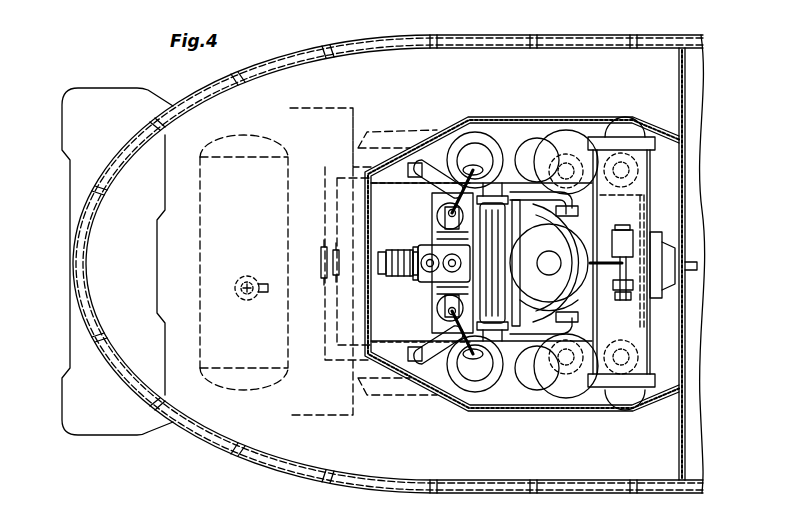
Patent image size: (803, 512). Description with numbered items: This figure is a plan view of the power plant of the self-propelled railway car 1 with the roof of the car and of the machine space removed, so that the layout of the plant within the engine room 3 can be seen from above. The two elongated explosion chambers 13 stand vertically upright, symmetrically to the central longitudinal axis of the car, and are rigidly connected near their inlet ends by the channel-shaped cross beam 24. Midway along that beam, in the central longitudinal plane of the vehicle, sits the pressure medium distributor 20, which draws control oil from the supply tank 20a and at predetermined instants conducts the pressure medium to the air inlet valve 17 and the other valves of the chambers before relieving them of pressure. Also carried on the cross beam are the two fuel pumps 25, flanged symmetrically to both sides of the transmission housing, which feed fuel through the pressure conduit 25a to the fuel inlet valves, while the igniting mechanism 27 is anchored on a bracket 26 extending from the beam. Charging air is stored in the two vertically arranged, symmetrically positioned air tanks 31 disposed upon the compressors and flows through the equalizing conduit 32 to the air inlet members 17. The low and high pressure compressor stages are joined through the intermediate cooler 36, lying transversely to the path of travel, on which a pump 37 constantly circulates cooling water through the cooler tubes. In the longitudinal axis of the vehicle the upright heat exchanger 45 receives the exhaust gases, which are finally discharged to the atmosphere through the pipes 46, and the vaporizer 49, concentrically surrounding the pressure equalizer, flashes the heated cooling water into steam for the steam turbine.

The self-propelled railway car 1 is at (133, 368).
The engine room 3 is at (665, 353).
The explosion chambers 13 is at (467, 157).
The air inlet valve 17 is at (430, 164).
The pressure medium distributor 20 is at (441, 279).
The supply tank 20a is at (223, 282).
The cross beam 24 is at (432, 212).
The fuel pumps 25 is at (447, 222).
The pressure conduit 25a is at (438, 194).
The bracket 26 is at (421, 276).
The igniting mechanism 27 is at (394, 256).
The air tanks 31 is at (543, 143).
The equalizing conduit 32 is at (595, 227).
The intermediate cooler 36 is at (645, 219).
The pump 37 is at (628, 291).
The heat exchanger 45 is at (509, 252).
The pipes 46 is at (510, 293).
The vaporizer 49 is at (571, 283).